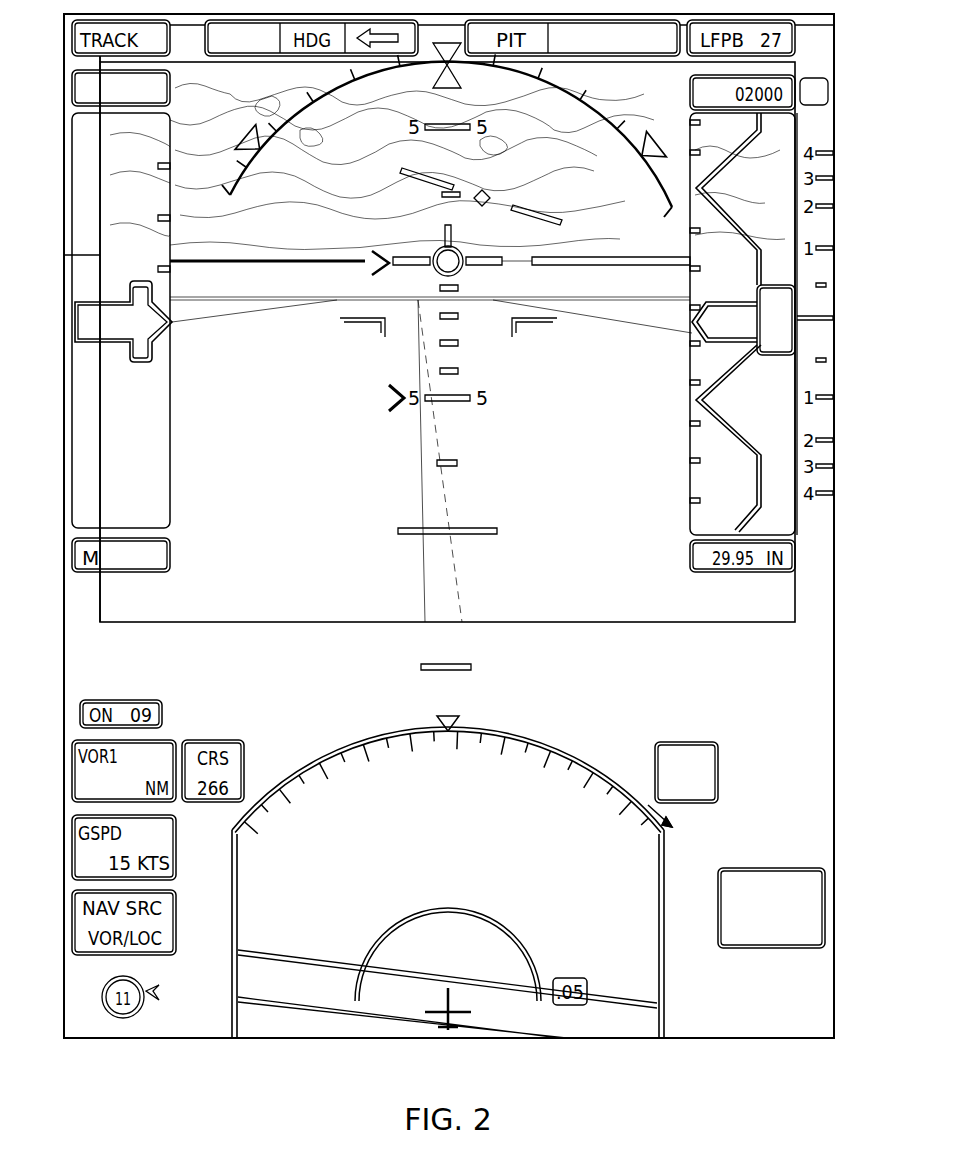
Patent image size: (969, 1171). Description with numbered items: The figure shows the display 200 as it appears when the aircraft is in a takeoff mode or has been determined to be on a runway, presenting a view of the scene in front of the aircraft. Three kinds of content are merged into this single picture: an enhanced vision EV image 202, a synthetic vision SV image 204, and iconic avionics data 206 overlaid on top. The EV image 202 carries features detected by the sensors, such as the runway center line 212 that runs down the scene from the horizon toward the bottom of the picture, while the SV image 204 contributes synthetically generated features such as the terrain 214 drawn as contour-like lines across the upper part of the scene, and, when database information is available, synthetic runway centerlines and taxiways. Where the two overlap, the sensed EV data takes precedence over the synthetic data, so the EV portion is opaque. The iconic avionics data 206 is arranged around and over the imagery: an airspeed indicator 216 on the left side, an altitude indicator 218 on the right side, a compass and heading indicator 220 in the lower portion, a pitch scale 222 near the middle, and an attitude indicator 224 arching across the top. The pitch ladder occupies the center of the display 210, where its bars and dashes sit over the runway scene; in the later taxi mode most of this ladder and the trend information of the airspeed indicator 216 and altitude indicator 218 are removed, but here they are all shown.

The display 200 is at (792, 716).
The EV image 202 is at (570, 615).
The SV image 204 is at (290, 633).
The iconic avionics data 206 is at (178, 404).
The center of the display 210 is at (466, 347).
The runway center line 212 is at (427, 496).
The terrain 214 is at (817, 600).
The airspeed indicator 216 is at (159, 497).
The altitude indicator 218 is at (701, 437).
The compass and heading indicator 220 is at (563, 743).
The pitch scale 222 is at (475, 528).
The attitude indicator 224 is at (603, 117).